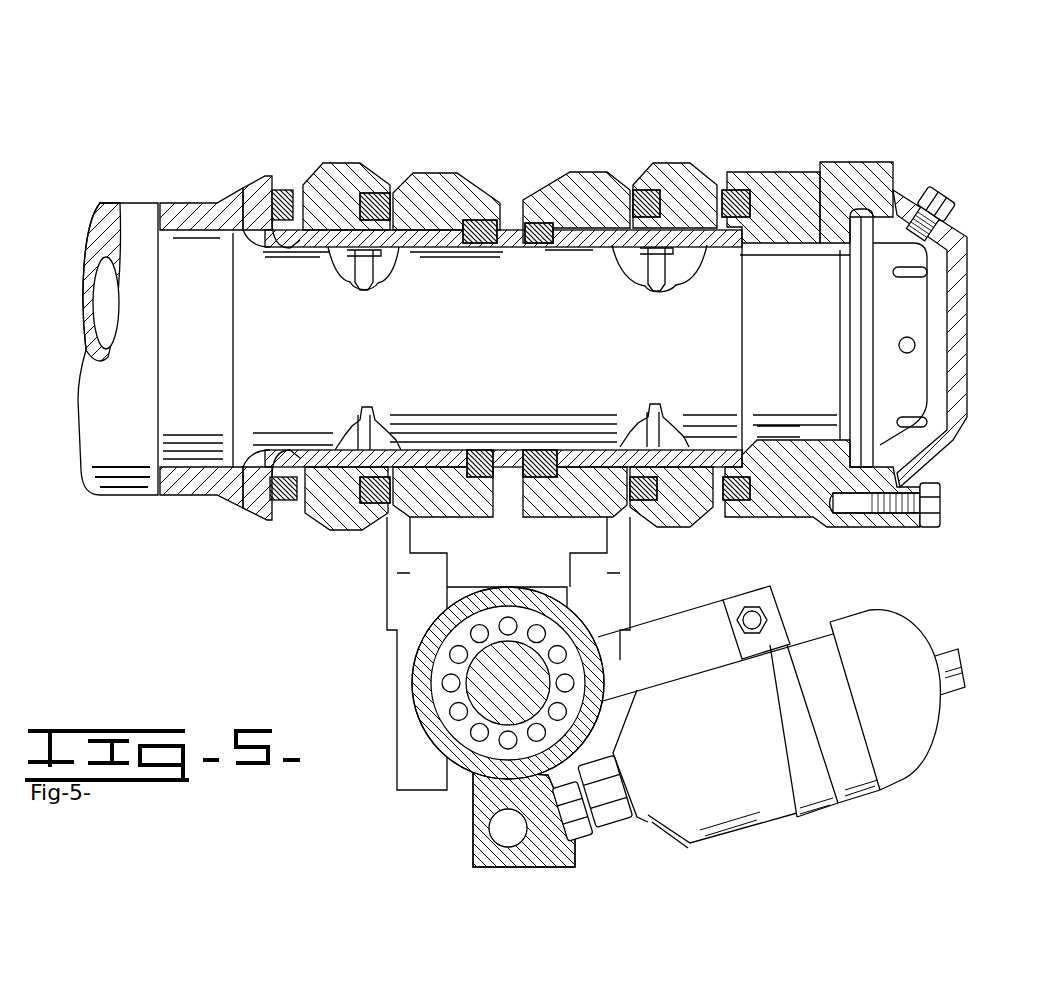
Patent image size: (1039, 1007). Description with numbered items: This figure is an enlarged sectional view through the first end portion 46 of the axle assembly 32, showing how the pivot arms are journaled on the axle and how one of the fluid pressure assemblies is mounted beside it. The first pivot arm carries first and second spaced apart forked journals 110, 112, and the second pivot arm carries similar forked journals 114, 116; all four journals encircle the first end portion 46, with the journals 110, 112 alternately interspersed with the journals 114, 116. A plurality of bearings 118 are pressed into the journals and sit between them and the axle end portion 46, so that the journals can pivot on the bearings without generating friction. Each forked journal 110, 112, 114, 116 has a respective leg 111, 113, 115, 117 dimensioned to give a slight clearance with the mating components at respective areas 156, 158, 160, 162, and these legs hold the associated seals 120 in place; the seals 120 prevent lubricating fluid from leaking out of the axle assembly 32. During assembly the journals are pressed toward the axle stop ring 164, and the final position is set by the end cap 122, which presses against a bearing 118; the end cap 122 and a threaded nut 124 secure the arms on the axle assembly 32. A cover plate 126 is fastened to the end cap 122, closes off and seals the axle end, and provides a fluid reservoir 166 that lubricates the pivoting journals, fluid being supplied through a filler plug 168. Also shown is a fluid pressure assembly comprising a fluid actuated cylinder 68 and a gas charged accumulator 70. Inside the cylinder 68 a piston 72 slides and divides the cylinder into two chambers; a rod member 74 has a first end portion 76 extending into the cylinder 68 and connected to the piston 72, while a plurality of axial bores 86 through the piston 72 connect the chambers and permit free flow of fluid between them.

The axle assembly 32 is at (95, 508).
The first end portion 46 is at (500, 327).
The fluid actuated cylinder 68 is at (493, 597).
The gas charged accumulator 70 is at (720, 744).
The piston 72 is at (577, 678).
The rod member 74 is at (525, 697).
The first end portion 76 is at (443, 675).
The axial bores 86 is at (478, 738).
The first forked journal 110 is at (688, 175).
The leg 111 is at (762, 217).
The second forked journal 112 is at (445, 183).
The leg 113 is at (394, 218).
The first forked journal 114 is at (592, 180).
The leg 115 is at (642, 212).
The second forked journal 116 is at (348, 178).
The leg 117 is at (290, 232).
The bearings 118 is at (348, 262).
The seals 120 is at (492, 448).
The end cap 122 is at (838, 165).
The threaded nut 124 is at (882, 322).
The cover plate 126 is at (966, 257).
The clearance area 156 is at (752, 250).
The clearance area 158 is at (330, 205).
The clearance area 160 is at (712, 225).
The clearance area 162 is at (198, 221).
The axle stop ring 164 is at (183, 203).
The fluid reservoir 166 is at (927, 423).
The filler plug 168 is at (948, 195).